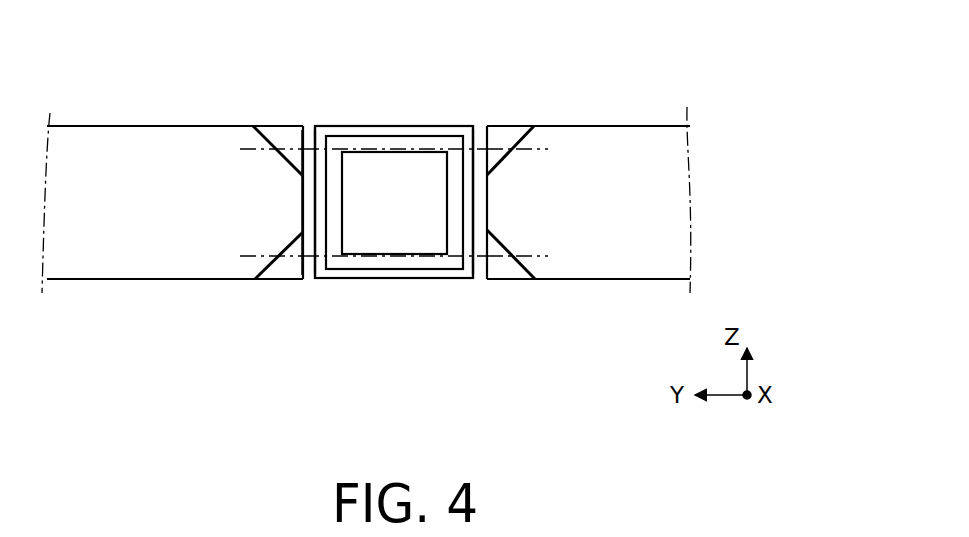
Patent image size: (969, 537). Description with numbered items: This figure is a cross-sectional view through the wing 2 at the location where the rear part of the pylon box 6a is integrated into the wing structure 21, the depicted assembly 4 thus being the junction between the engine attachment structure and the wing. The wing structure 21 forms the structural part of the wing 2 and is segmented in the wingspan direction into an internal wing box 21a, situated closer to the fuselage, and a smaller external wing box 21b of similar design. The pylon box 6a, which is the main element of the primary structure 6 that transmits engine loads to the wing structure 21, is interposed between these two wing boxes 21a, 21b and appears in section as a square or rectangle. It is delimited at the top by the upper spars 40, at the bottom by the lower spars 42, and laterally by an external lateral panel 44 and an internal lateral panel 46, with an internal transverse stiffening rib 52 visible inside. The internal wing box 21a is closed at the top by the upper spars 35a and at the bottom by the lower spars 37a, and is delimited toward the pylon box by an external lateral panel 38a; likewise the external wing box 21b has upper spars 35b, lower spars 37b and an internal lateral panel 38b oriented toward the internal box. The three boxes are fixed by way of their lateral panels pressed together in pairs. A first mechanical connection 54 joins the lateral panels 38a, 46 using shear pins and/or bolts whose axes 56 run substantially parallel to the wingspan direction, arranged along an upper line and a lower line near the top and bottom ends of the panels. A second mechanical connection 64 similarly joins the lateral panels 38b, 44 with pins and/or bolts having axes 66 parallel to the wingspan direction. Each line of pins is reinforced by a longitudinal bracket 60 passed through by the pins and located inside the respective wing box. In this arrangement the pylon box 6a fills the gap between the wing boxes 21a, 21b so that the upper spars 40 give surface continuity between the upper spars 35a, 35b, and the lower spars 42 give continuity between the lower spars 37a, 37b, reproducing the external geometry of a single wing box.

The wing 2 is at (377, 31).
The wing structure 21 is at (392, 117).
The internal wing box 21a is at (97, 117).
The external wing box 21b is at (699, 171).
The upper spars 35a is at (182, 125).
The upper spars 35b is at (610, 125).
The lower spars 37a is at (178, 280).
The lower spars 37b is at (612, 280).
The external lateral panel 38a is at (302, 178).
The internal lateral panel 38b is at (488, 178).
The upper spars 40 is at (431, 125).
The lower spars 42 is at (412, 280).
The external lateral panel 44 is at (474, 205).
The internal lateral panel 46 is at (314, 203).
The internal transverse stiffening ribs 52 is at (336, 200).
The first mechanical connection 54 is at (270, 187).
The axes 56 is at (245, 144).
The longitudinal bracket 60 is at (280, 126).
The second mechanical connection 64 is at (522, 245).
The axes 66 is at (437, 150).
The pylon box 6a is at (391, 287).
The primary structure 6 is at (375, 380).
The device 4 is at (375, 417).